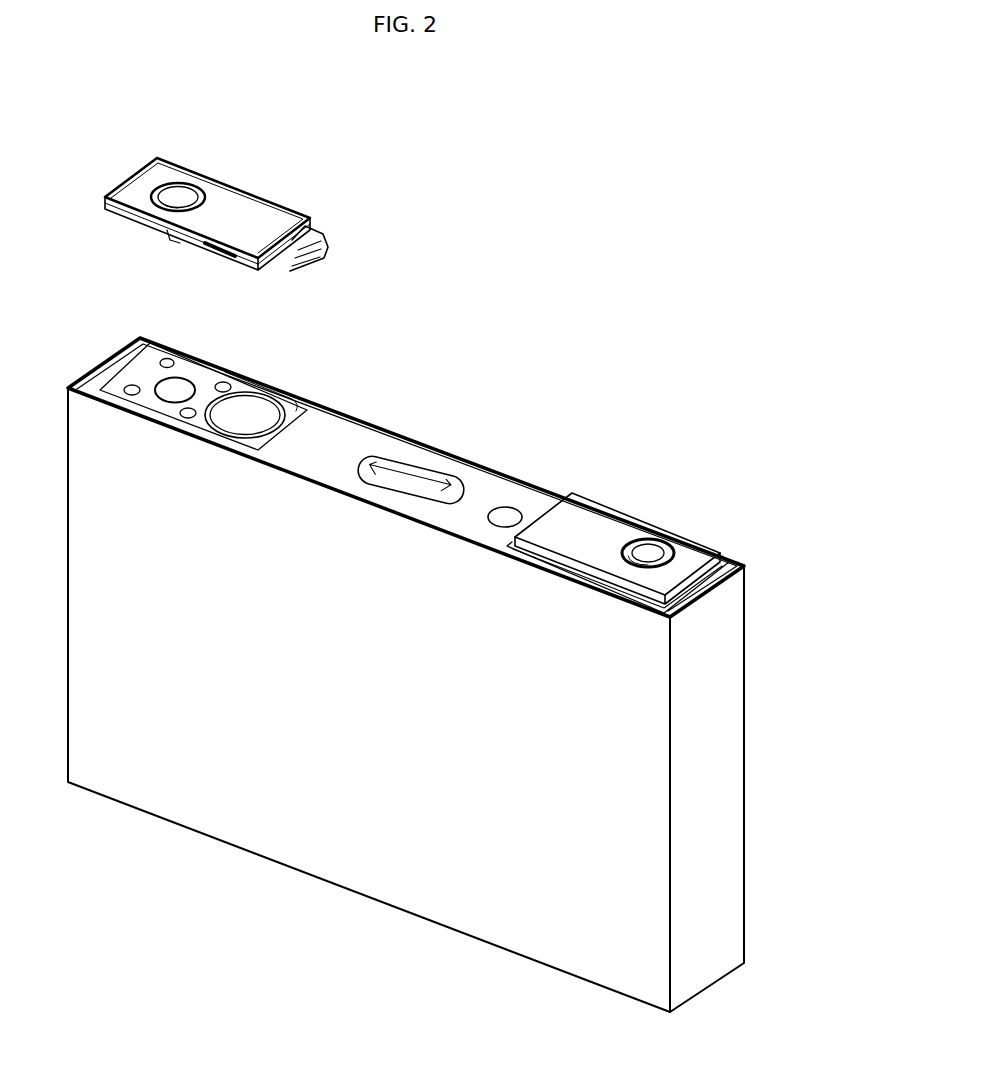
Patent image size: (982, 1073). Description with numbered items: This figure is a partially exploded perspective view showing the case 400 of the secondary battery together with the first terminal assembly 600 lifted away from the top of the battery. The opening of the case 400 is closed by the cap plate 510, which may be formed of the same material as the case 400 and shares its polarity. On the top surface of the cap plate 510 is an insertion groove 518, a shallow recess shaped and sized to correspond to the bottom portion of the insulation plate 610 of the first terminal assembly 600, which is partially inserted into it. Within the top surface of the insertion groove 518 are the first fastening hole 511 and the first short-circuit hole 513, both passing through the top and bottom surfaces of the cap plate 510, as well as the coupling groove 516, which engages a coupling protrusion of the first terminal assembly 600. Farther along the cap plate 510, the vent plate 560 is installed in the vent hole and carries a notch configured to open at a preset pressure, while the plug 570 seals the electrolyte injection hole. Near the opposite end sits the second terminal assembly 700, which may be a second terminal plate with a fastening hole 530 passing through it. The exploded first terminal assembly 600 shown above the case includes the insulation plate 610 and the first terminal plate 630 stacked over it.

The case 400 is at (737, 793).
The cap plate 510 is at (483, 470).
The first fastening hole 511 is at (177, 390).
The first short-circuit hole 513 is at (277, 397).
The coupling groove 516 is at (223, 382).
The insertion groove 518 is at (142, 368).
The vent plate 560 is at (412, 478).
The plug 570 is at (507, 514).
The second terminal assembly 700 is at (602, 510).
The terminal hole 530 is at (648, 552).
The first terminal assembly 600 is at (229, 185).
The insulation plate 610 is at (320, 213).
The first terminal plate 630 is at (238, 208).